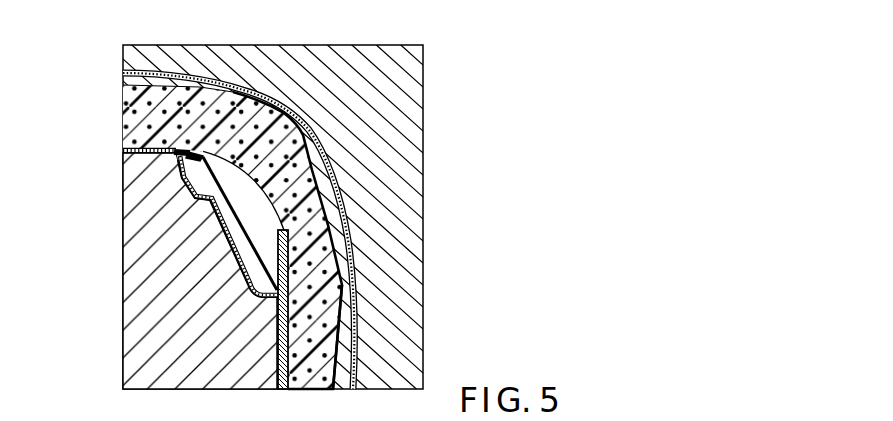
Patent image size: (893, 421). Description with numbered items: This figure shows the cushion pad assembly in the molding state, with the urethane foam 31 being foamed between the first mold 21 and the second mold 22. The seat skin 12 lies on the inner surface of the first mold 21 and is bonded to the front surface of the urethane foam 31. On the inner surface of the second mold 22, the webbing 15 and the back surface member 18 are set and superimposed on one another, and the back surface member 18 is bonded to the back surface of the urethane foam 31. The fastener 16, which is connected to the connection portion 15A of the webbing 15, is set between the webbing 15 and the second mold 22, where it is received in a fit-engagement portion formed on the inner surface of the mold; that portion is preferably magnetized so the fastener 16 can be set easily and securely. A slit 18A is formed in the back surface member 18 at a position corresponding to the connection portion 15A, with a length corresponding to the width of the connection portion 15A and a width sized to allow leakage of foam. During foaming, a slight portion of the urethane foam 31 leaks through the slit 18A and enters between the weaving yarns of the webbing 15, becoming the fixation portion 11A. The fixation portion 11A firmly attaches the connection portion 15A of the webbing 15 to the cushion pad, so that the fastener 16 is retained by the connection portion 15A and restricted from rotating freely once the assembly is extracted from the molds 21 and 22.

The first mold 21 is at (383, 103).
The second mold 22 is at (177, 348).
The seat skin 12 is at (326, 219).
The urethane foam 31 is at (310, 357).
The fastener 16 is at (214, 221).
The back surface member 18 is at (289, 265).
The slit 18A is at (190, 147).
The fixation portion 11A is at (194, 150).
The webbing 15 is at (277, 324).
The connection portion 15A is at (252, 91).